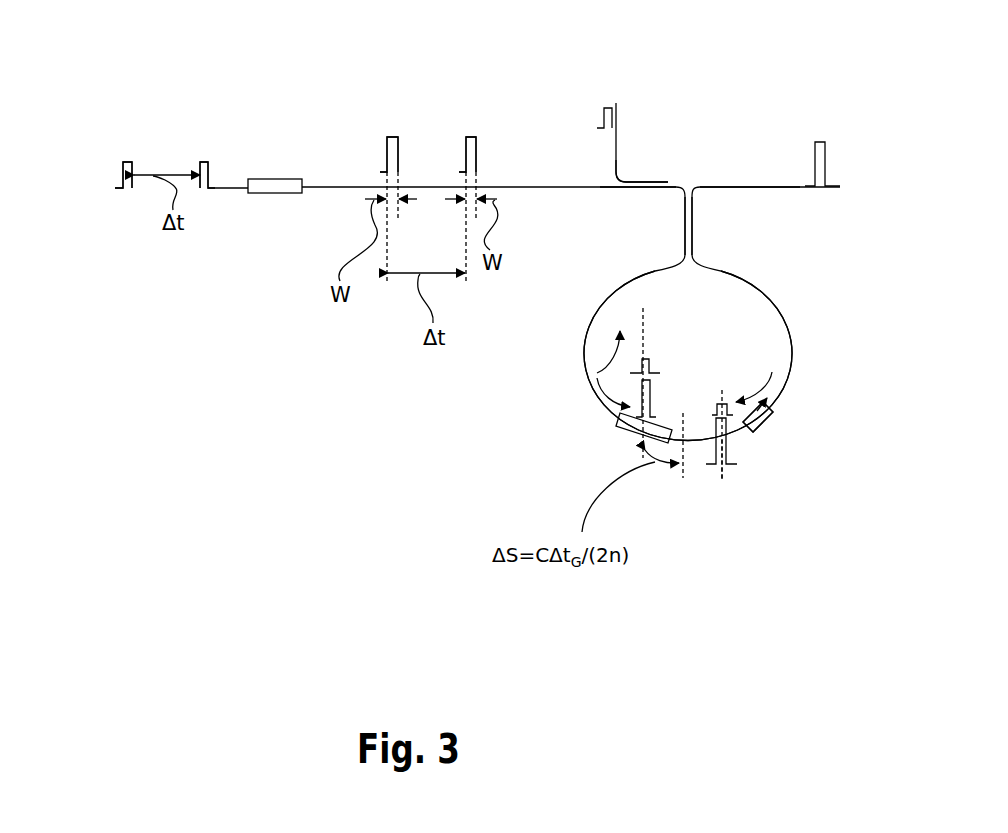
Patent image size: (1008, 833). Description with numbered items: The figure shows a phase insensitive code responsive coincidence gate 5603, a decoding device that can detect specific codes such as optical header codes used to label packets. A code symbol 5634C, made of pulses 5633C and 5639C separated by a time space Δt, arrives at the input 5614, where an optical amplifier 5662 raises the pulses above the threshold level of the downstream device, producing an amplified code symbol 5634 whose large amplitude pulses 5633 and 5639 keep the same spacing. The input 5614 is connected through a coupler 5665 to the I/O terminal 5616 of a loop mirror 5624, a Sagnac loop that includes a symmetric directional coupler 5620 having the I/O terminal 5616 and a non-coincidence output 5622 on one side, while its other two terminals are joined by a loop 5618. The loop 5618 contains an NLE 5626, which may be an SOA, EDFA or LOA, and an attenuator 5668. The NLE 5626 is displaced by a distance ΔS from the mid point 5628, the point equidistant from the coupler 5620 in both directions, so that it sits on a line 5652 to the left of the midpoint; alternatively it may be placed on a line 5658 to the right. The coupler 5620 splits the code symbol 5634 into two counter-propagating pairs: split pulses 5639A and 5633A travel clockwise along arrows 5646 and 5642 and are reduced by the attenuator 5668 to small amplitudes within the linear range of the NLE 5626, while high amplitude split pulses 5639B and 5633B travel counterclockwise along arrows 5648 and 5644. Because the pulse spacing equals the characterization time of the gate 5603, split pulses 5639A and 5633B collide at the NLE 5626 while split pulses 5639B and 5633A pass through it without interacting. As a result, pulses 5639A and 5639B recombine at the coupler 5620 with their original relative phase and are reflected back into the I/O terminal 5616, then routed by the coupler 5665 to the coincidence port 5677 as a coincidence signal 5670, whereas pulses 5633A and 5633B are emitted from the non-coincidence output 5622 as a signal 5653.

The code responsive coincidence gate 5603 is at (562, 63).
The code symbol 5634C is at (104, 177).
The pulse 5633C is at (132, 160).
The pulse 5639C is at (214, 163).
The input 5614 is at (227, 190).
The optical amplifier 5662 is at (285, 179).
The code symbol 5634 is at (370, 149).
The pulse 5633 is at (400, 135).
The pulse 5639 is at (478, 135).
The coincidence signal 5670 is at (602, 112).
The coincidence port 5677 is at (618, 133).
The coupler 5665 is at (618, 186).
The I/O terminal 5616 is at (680, 186).
The non-coincidence output 5622 is at (745, 186).
The output signal 5653 is at (828, 140).
The symmetric directional coupler 5620 is at (685, 228).
The loop 5618 is at (603, 291).
The loop mirror 5624 is at (779, 280).
The arrow 5646 is at (597, 373).
The arrow 5644 is at (601, 403).
The arrow 5642 is at (774, 382).
The NLE 5626 is at (618, 432).
The arrow 5648 is at (775, 408).
The attenuator 5668 is at (770, 425).
The line 5652 is at (644, 355).
The split pulse 5639A is at (656, 373).
The split pulse 5633B is at (651, 405).
The split pulse 5633A is at (727, 405).
The split pulse 5639B is at (737, 465).
The mid point 5628 is at (685, 445).
The line 5658 is at (722, 480).